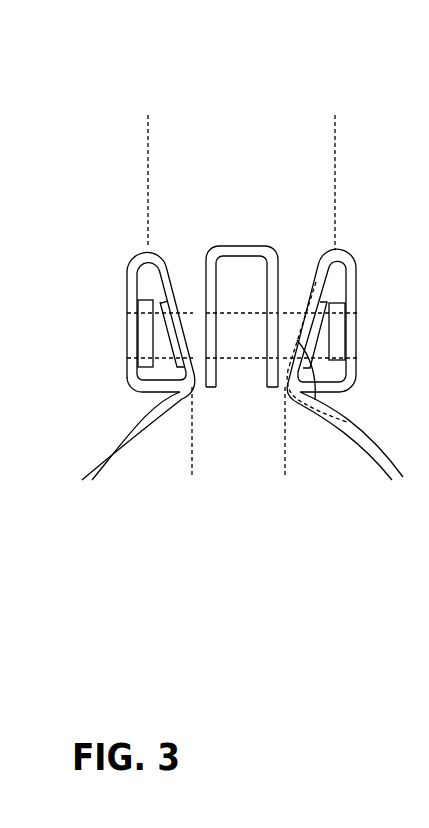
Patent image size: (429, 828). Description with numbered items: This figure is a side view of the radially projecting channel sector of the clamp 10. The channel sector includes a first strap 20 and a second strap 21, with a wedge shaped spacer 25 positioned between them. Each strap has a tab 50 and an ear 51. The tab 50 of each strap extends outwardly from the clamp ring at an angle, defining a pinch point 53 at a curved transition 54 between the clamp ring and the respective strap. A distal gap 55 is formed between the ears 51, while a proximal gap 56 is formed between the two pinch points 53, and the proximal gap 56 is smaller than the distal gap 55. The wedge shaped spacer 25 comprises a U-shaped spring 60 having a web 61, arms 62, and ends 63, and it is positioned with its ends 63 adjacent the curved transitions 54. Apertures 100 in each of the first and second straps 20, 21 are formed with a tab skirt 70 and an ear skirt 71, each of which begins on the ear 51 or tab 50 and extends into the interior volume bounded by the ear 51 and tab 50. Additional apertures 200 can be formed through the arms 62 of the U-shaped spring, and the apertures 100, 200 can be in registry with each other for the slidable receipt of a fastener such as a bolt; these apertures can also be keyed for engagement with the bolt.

The clamp 10 is at (295, 73).
The first strap 20 is at (375, 205).
The second strap 21 is at (145, 224).
The wedge shaped spacer 25 is at (248, 225).
The tab 50 is at (163, 270).
The ear 51 is at (131, 287).
The pinch point 53 is at (183, 393).
The curved transition 54 is at (183, 398).
The distal gap 55 is at (148, 132).
The proximal gap 56 is at (285, 468).
The U-shaped spring 60 is at (282, 243).
The web 61 is at (233, 253).
The arms 62 is at (271, 296).
The ends 63 is at (270, 368).
The tab skirt 70 is at (163, 302).
The ear skirt 71 is at (147, 302).
The apertures 100 is at (133, 336).
The additional apertures 200 is at (272, 340).